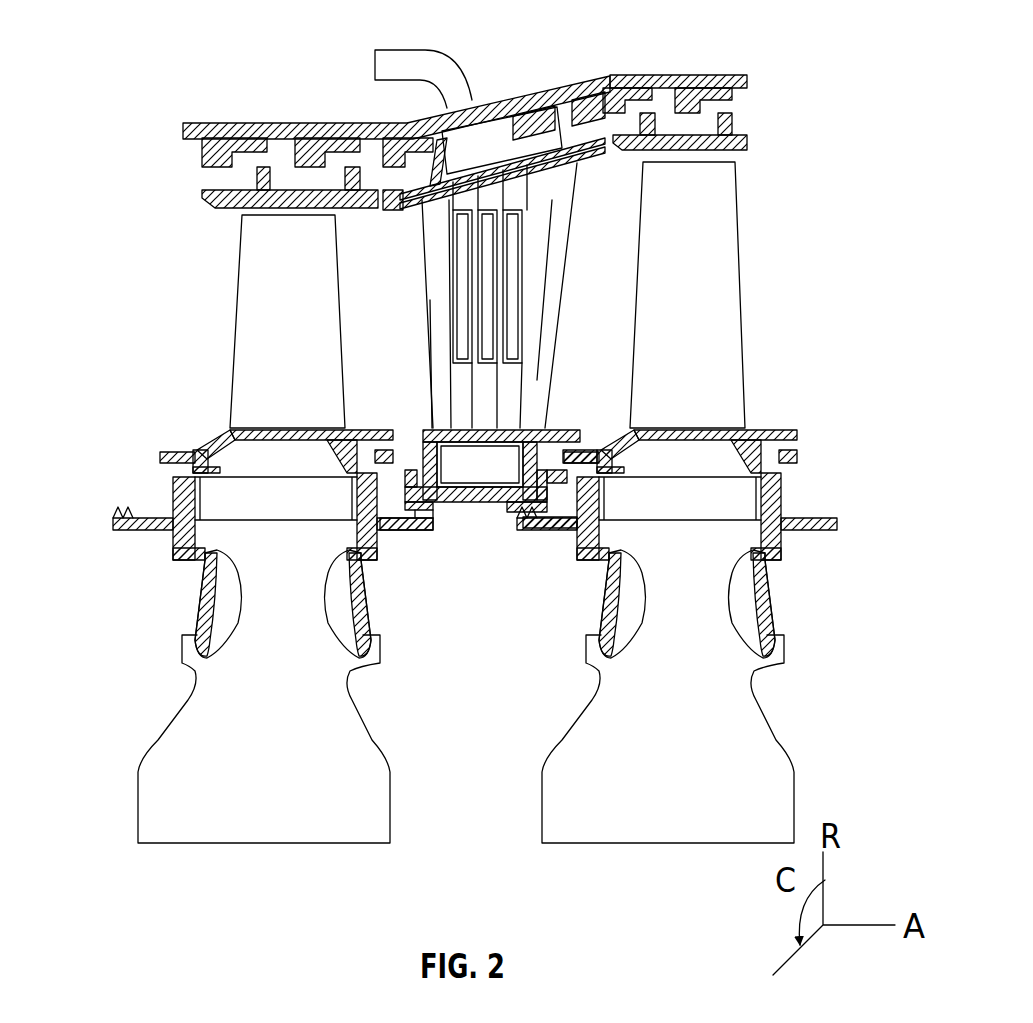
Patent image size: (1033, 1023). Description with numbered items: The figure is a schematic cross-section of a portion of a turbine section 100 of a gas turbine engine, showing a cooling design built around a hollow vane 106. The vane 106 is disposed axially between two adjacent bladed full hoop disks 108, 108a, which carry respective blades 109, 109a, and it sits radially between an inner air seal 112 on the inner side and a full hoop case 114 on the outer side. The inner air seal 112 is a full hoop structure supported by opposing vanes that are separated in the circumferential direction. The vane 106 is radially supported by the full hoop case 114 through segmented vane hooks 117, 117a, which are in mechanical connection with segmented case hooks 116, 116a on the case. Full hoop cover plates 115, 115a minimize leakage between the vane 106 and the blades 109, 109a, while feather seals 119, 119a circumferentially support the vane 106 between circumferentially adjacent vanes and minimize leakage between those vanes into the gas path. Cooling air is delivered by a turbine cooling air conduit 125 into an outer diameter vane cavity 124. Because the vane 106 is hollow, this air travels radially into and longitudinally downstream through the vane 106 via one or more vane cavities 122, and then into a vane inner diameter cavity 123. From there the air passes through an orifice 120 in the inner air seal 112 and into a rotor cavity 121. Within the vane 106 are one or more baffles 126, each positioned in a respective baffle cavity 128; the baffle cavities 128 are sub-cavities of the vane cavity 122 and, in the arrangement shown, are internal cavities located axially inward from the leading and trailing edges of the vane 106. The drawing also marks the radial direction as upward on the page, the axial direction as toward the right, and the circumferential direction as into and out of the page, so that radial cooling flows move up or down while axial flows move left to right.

The gas turbine engine section 100 is at (183, 44).
The vane 106 is at (555, 260).
The bladed full hoop disk 108 is at (775, 778).
The bladed full hoop disk 108a is at (150, 808).
The blade 109 is at (745, 290).
The blade 109a is at (238, 275).
The inner air seal 112 is at (590, 505).
The full hoop case 114 is at (748, 80).
The full hoop cover plate 115 is at (764, 596).
The full hoop cover plate 115a is at (362, 596).
The segmented case hook 116 is at (538, 108).
The segmented case hook 116a is at (400, 136).
The segmented vane hook 117 is at (582, 90).
The segmented vane hook 117a is at (437, 140).
The feather seal 119 is at (601, 152).
The feather seal 119a is at (417, 438).
The orifice 120 is at (463, 500).
The rotor cavity 121 is at (483, 668).
The vane cavity 122 is at (543, 322).
The vane inner diameter cavity 123 is at (475, 480).
The outer diameter vane cavity 124 is at (490, 134).
The turbine cooling air conduit 125 is at (402, 54).
The baffle 126 is at (462, 270).
The baffle cavity 128 is at (448, 332).